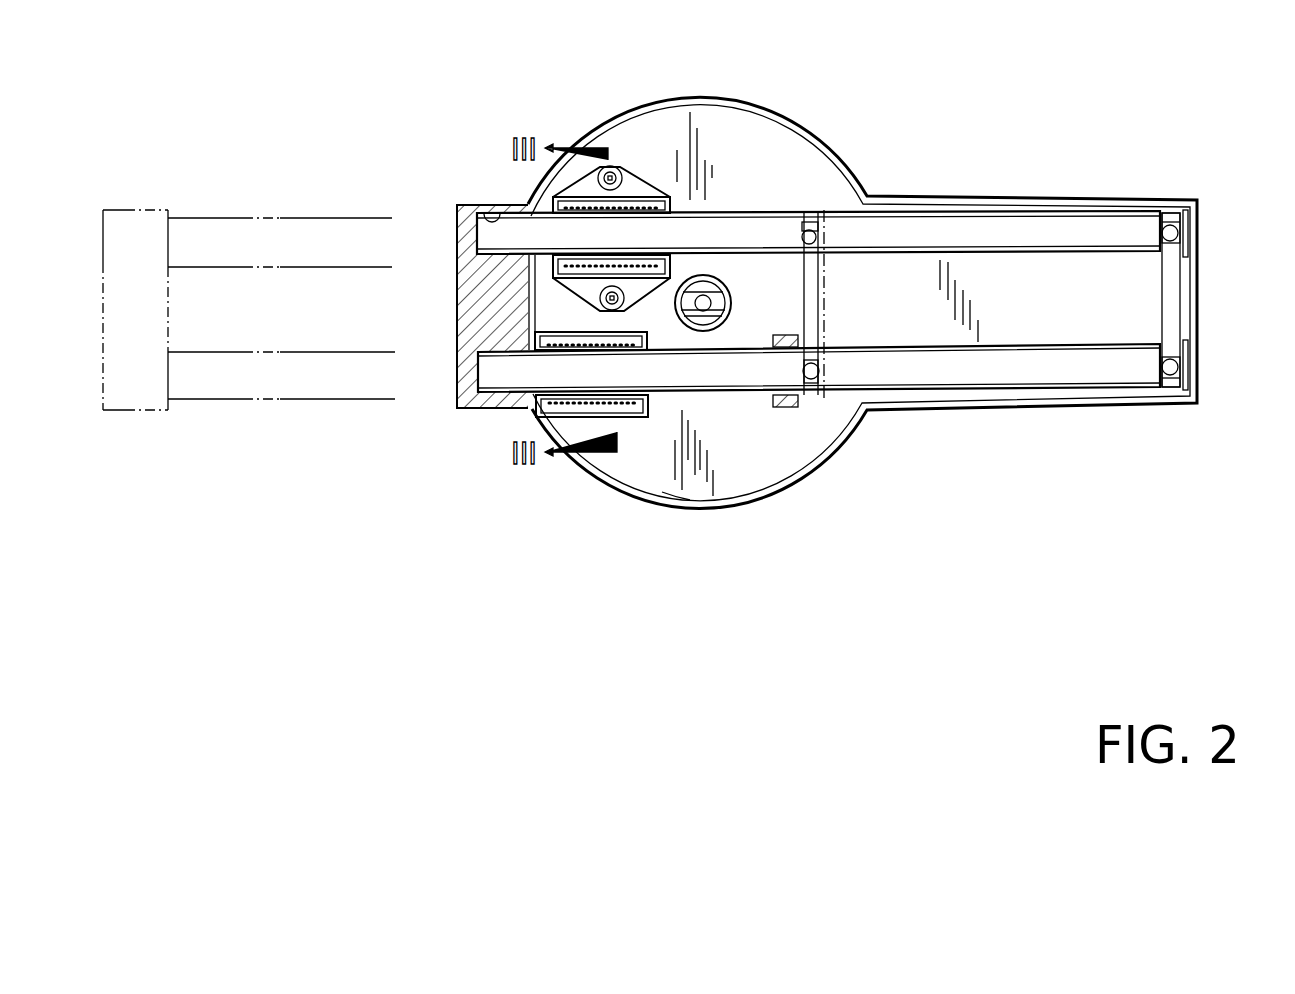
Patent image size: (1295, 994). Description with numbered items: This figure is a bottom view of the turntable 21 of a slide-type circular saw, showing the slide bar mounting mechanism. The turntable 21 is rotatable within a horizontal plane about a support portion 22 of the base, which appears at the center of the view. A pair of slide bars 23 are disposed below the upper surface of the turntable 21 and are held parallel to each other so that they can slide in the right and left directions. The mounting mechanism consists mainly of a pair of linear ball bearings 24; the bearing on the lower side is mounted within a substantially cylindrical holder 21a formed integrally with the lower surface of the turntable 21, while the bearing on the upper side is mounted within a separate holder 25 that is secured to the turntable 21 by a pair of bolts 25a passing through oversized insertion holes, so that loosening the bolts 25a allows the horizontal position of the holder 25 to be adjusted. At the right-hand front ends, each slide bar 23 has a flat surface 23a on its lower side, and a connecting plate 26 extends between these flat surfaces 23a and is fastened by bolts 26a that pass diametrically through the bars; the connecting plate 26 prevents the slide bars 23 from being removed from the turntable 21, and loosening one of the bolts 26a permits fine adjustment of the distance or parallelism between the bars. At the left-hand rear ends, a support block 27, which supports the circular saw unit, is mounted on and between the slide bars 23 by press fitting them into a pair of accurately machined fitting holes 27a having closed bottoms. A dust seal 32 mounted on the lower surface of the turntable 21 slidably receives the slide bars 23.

The turntable 21 is at (753, 107).
The cylindrical holder 21a is at (632, 418).
The support portion 22 is at (727, 294).
The slide bars 23 is at (305, 233).
The flat surface 23a is at (1168, 215).
The linear ball bearings 24 is at (597, 200).
The holder 25 is at (633, 190).
The bolts 25a is at (609, 168).
The connecting plate 26 is at (1170, 288).
The bolts 26a is at (808, 223).
The support block 27 is at (108, 316).
The fitting holes 27a is at (490, 215).
The dust seal 32 is at (785, 405).